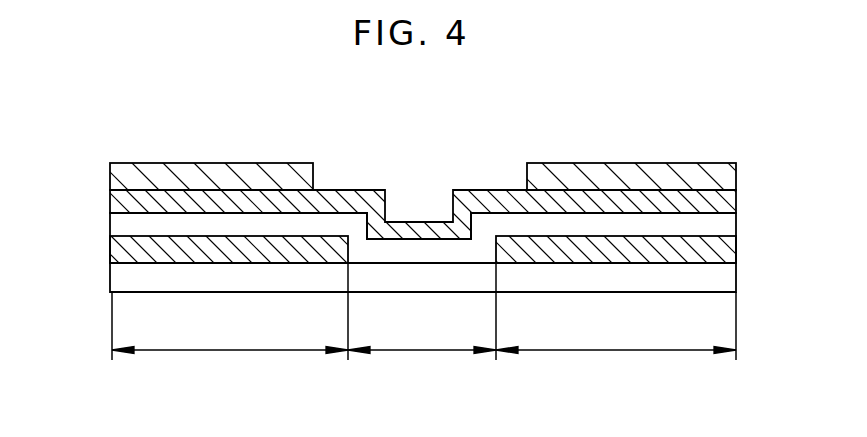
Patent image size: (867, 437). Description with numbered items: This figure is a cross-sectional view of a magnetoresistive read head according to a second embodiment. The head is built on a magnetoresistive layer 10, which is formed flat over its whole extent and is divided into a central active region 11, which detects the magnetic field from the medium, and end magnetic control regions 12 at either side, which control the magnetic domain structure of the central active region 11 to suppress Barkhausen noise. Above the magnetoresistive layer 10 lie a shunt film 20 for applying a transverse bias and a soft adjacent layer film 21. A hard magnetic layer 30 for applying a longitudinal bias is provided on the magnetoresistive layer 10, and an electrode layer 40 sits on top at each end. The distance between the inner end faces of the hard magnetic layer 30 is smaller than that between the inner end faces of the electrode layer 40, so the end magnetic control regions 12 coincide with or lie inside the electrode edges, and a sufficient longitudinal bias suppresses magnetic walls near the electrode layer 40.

The magnetoresistive layer 10 is at (128, 280).
The central active region 11 is at (427, 352).
The end magnetic control regions 12 is at (242, 352).
The shunt film 20 is at (712, 226).
The soft adjacent layer film 21 is at (120, 200).
The hard magnetic layer 30 is at (120, 250).
The electrode layer 40 is at (163, 170).